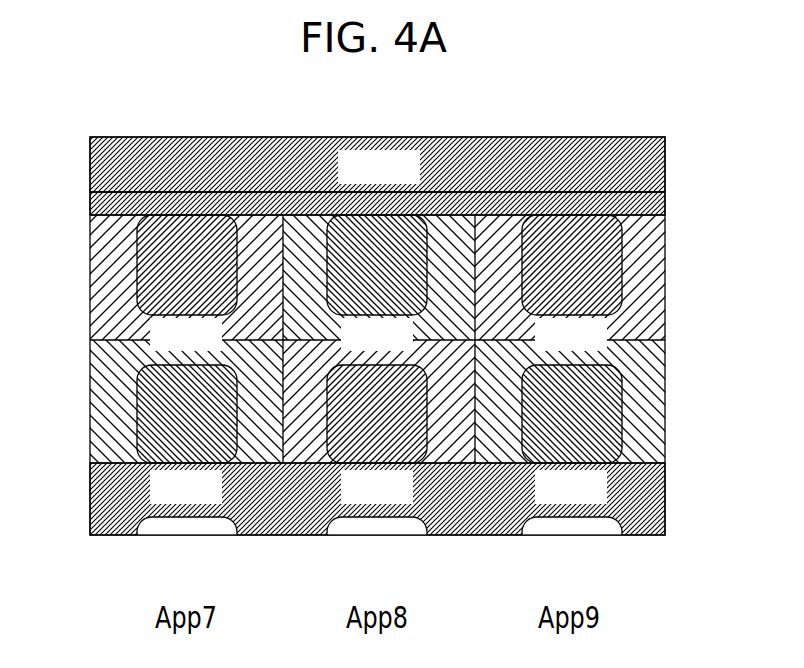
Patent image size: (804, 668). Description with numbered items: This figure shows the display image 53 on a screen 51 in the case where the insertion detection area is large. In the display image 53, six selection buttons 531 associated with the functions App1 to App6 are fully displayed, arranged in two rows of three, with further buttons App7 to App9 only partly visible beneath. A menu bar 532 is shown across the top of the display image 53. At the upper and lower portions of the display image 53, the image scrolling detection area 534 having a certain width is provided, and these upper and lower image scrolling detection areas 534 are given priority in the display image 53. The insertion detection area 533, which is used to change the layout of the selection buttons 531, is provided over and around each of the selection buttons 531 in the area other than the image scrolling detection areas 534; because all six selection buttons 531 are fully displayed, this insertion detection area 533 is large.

The display screen 51 is at (487, 109).
The display image 53 is at (90, 428).
The selection button 531 is at (137, 258).
The menu bar 532 is at (100, 161).
The insertion detection area 533 is at (638, 279).
The image scrolling detection area 534 is at (645, 200).